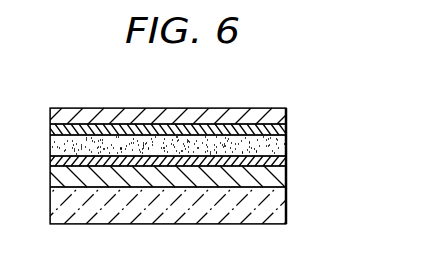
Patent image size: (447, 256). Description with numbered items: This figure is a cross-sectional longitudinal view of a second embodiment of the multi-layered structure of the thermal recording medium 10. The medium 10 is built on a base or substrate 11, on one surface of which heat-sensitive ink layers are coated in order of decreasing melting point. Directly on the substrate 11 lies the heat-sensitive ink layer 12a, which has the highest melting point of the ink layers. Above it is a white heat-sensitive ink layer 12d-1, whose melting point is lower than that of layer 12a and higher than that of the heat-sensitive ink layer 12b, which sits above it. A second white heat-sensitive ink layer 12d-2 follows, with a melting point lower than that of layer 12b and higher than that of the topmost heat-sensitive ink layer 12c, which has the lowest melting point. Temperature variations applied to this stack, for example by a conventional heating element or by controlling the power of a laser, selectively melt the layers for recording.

The medium 10 is at (370, 217).
The substrate 11 is at (287, 213).
The heat-sensitive ink layer 12a is at (287, 176).
The white heat-sensitive ink layer 12d-1 is at (287, 160).
The heat-sensitive ink layer 12b is at (287, 147).
The white heat-sensitive ink layer 12d-2 is at (287, 130).
The heat-sensitive ink layer 12c is at (287, 112).